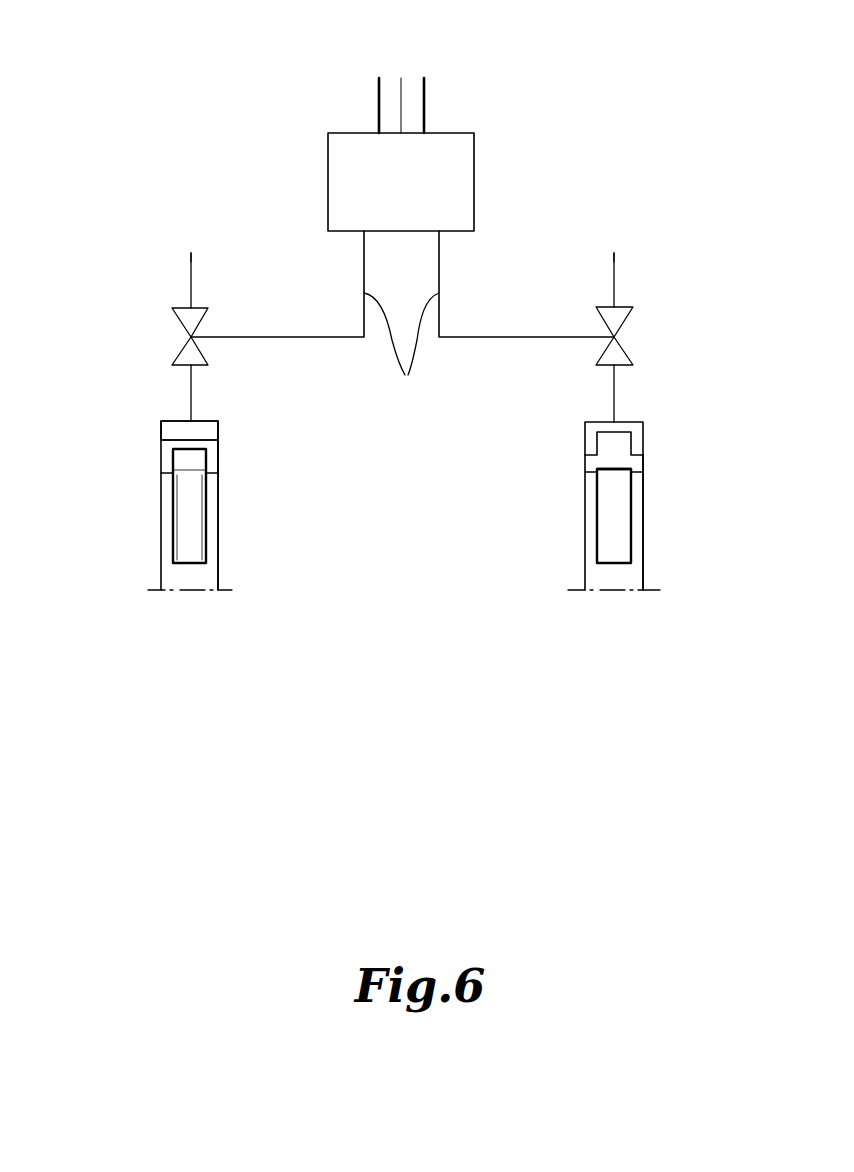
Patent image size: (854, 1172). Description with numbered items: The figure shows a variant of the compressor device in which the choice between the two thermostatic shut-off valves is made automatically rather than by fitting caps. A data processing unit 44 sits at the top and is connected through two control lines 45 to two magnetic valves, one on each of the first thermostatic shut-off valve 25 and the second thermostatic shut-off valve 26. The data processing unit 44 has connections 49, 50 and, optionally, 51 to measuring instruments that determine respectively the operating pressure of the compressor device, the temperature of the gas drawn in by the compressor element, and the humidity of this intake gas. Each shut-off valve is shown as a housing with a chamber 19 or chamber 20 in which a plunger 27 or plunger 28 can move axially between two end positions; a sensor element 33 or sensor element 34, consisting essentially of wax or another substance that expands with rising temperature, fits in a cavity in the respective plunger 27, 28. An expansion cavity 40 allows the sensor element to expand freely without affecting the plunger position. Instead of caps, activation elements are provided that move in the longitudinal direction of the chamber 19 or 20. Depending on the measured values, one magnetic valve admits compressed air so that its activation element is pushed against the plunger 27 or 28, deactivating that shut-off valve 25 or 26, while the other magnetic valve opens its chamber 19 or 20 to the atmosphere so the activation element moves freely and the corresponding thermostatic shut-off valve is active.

The chamber 19 is at (203, 432).
The chamber 20 is at (640, 470).
The first thermostatic shut-off valve 25 is at (160, 502).
The second thermostatic shut-off valve 26 is at (585, 490).
The plunger 27 is at (212, 498).
The plunger 28 is at (638, 499).
The sensor element 33 is at (612, 536).
The sensor element 34 is at (188, 548).
The expansion cavity 40 is at (187, 460).
The data processing unit 44 is at (362, 177).
The control lines 45 is at (402, 316).
The connection 49 is at (379, 82).
The connection 50 is at (401, 96).
The connection 51 is at (424, 97).